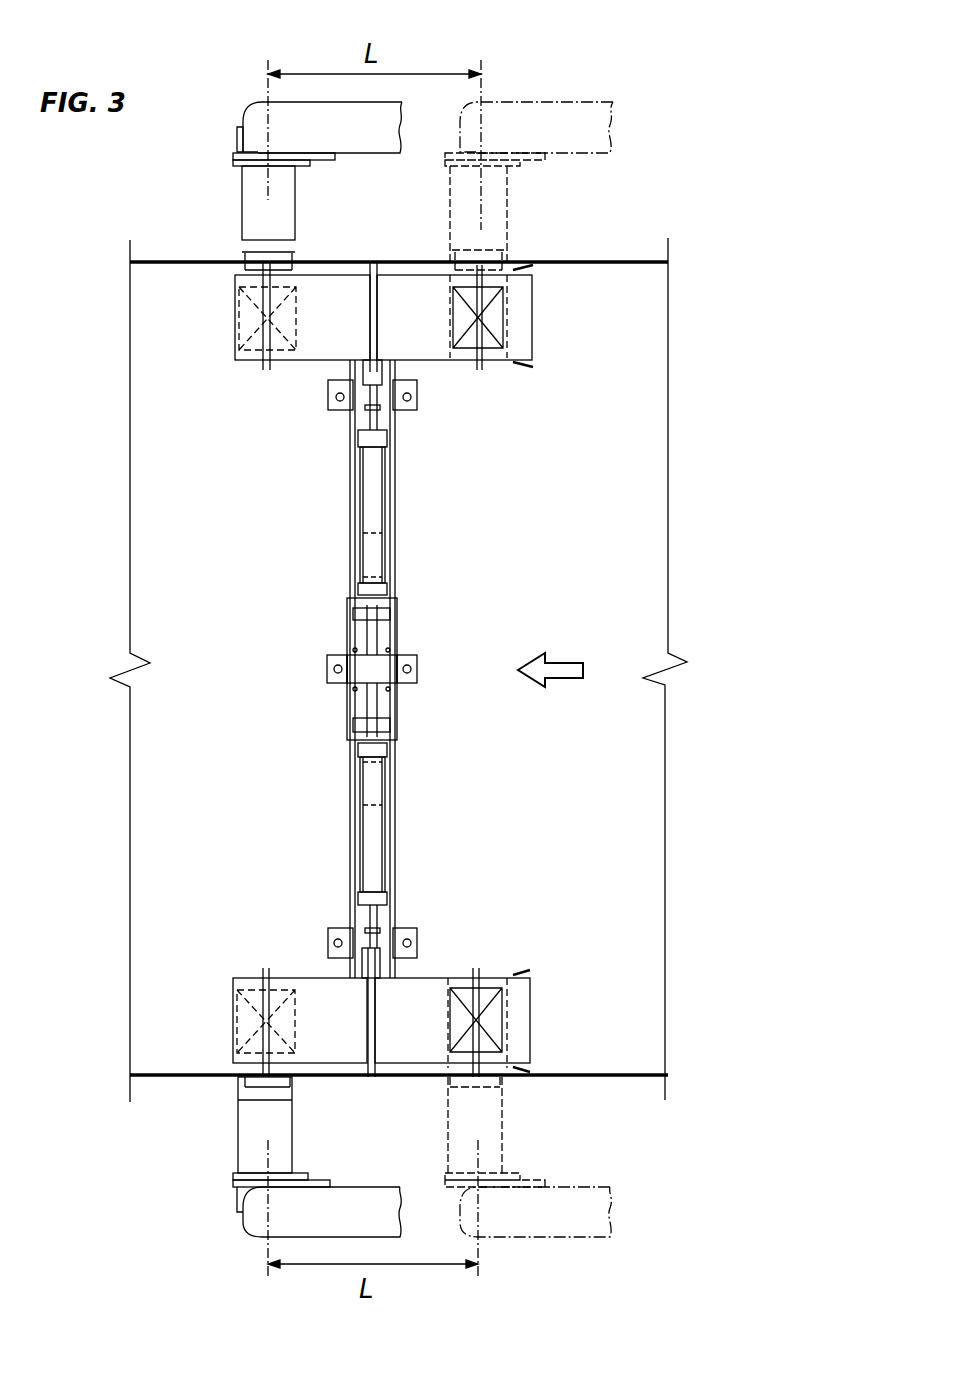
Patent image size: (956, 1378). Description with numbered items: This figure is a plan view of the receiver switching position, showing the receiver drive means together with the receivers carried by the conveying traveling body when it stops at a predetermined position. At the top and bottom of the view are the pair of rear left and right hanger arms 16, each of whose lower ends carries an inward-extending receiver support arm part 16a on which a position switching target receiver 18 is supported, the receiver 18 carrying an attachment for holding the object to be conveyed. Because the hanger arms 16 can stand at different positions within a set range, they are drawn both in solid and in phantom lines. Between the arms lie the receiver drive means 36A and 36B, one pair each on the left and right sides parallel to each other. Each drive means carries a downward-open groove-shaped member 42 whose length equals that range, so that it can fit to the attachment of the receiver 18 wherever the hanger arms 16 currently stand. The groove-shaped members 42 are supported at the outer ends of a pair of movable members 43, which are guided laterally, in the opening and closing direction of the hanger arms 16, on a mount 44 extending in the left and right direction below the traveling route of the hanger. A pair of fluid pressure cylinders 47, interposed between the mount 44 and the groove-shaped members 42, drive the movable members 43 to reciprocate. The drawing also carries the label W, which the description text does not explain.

The hanger arm 16 is at (345, 130).
The receiver support arm part 16a is at (253, 202).
The position switching target receiver 18 is at (247, 355).
The receiver drive means 36A is at (447, 365).
The receiver drive means 36B is at (428, 975).
The groove-shaped member 42 is at (402, 302).
The movable member 43 is at (352, 420).
The mount 44 is at (397, 627).
The fluid pressure cylinder 47 is at (373, 485).
The wall / work surface W is at (233, 584).